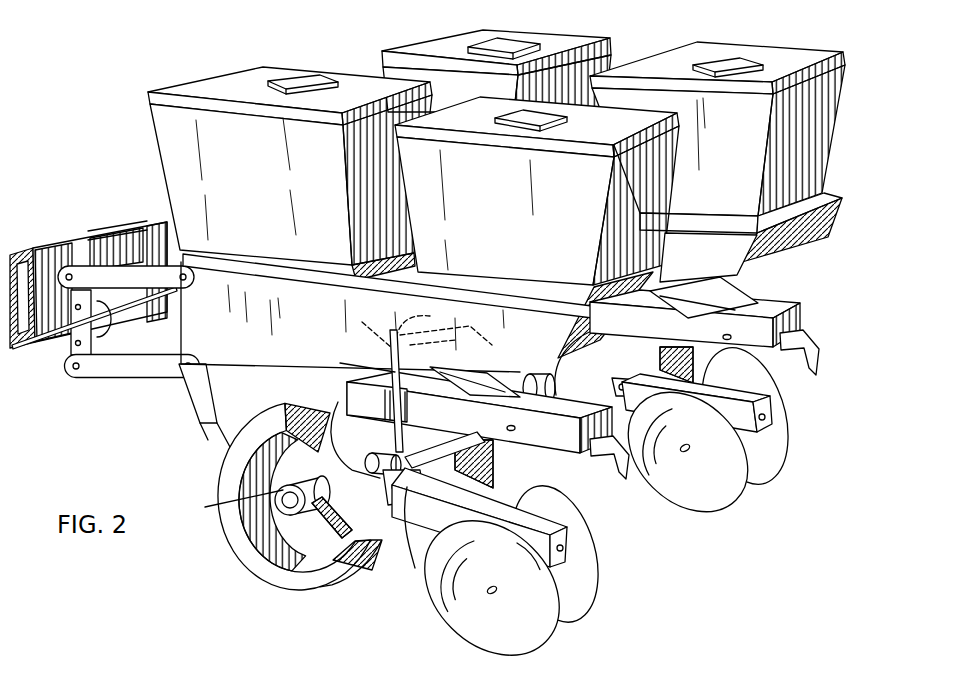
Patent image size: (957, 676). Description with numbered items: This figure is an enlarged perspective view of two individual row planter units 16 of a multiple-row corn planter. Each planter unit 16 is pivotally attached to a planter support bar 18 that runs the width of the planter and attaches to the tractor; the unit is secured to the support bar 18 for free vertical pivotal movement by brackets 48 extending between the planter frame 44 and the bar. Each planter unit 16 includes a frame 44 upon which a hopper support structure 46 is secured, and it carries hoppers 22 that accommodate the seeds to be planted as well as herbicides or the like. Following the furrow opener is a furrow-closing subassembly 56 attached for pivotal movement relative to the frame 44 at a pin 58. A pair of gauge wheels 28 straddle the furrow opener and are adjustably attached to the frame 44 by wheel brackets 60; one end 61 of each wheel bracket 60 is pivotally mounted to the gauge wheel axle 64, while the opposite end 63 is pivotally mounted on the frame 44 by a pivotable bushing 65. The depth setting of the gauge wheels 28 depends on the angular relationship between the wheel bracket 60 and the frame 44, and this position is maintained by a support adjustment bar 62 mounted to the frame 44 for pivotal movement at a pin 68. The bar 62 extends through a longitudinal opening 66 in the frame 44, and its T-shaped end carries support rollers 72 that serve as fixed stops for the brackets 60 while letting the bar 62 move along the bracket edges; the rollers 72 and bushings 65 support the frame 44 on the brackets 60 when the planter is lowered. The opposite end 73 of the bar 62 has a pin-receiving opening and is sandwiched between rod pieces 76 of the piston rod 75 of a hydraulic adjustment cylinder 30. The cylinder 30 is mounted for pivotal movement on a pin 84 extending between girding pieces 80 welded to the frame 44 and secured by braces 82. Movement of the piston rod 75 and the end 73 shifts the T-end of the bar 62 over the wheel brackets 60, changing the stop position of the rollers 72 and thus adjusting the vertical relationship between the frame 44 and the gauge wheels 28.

The row planter unit 16 is at (143, 150).
The planter support bar 18 is at (26, 254).
The hopper 22 is at (580, 90).
The gauge wheel 28 is at (272, 566).
The hydraulic adjustment cylinder 30 is at (728, 296).
The frame 44 is at (270, 389).
The hopper support structure 46 is at (312, 312).
The bracket 48 is at (127, 283).
The furrow-closing subassembly 56 is at (580, 627).
The pin 58 is at (404, 497).
The wheel bracket 60 is at (353, 536).
The end of wheel bracket 61 is at (302, 509).
The support adjustment bar 62 is at (392, 362).
The opposite end of wheel bracket 63 is at (339, 406).
The gauge wheel axle 64 is at (227, 504).
The pivotable bushing 65 is at (404, 539).
The longitudinal opening 66 is at (341, 362).
The pin 68 is at (377, 402).
The support roller 72 is at (396, 436).
The opposite end of bar 73 is at (367, 325).
The piston rod 75 is at (435, 338).
The rod pieces 76 is at (405, 317).
The girding piece 80 is at (472, 429).
The brace 82 is at (495, 450).
The pin 84 is at (516, 430).